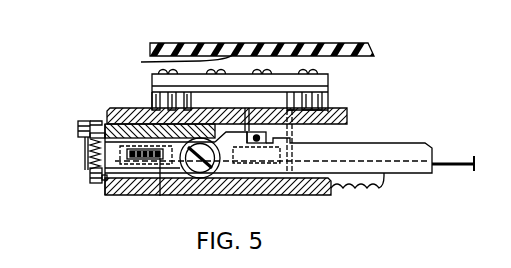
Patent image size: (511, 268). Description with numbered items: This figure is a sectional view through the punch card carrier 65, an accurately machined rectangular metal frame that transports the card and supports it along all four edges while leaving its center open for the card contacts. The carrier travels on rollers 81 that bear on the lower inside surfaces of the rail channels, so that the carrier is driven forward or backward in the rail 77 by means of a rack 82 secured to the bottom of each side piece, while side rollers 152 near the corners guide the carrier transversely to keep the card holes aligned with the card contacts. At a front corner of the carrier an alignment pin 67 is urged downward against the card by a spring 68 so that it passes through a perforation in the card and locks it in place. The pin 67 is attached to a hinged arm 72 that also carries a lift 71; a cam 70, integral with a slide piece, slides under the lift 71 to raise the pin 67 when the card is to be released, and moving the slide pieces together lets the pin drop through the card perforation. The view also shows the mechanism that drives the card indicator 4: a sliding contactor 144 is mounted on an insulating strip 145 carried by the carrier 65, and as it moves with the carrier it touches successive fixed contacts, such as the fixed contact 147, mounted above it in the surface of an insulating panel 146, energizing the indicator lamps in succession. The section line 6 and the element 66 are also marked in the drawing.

The card indicator 4 is at (136, 46).
The section line 6- 6 is at (105, 120).
The carrier 65 is at (416, 148).
The pull rod 66 is at (455, 158).
The alignment pin 67 is at (137, 162).
The spring 68 is at (91, 172).
The cam 70 is at (90, 144).
The lift 71 is at (78, 128).
The hinged arm 72 is at (117, 108).
The rail 77 is at (300, 186).
The roller 81 is at (205, 178).
The rack 82 is at (375, 190).
The sliding contactor 144 is at (236, 52).
The insulating strip 145 is at (322, 85).
The insulating panel 146 is at (374, 54).
The fixed contact 147 is at (174, 62).
The side roller 152 is at (160, 196).